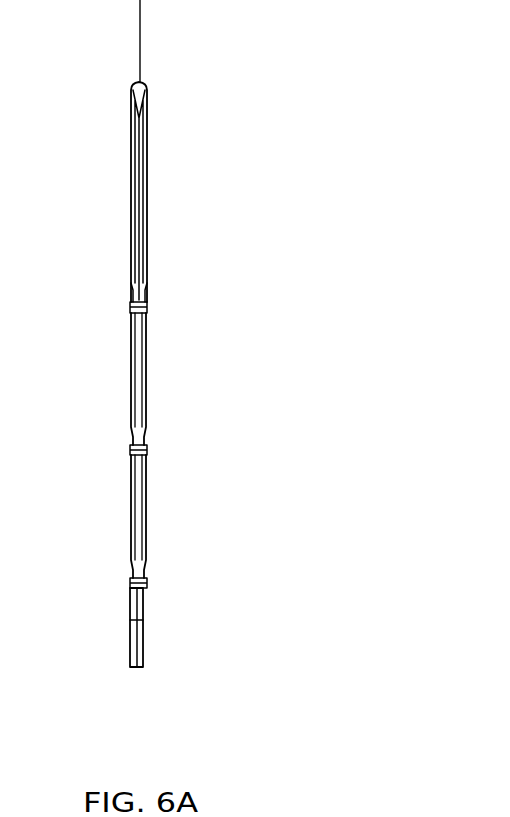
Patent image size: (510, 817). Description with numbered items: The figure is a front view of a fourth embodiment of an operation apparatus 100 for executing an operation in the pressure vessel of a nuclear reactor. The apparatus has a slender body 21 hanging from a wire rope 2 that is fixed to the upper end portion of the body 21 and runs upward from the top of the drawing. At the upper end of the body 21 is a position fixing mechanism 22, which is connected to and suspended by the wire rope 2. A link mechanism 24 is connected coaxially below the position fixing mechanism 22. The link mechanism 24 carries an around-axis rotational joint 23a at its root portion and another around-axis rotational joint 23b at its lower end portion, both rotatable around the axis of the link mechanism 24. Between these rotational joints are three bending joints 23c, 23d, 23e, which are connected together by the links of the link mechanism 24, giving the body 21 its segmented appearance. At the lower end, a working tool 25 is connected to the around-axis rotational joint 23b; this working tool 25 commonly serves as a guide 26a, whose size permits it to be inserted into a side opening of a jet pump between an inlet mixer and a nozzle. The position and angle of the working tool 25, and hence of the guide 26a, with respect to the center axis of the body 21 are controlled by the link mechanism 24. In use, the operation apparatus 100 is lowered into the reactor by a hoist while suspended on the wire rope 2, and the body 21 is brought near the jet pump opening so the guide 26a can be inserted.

The wire rope 2 is at (140, 35).
The position fixing mechanism 22 is at (148, 165).
The around-axis rotational joint 23a is at (147, 266).
The bending joint 23c is at (146, 305).
The link mechanism 24 is at (146, 341).
The body 21 is at (166, 384).
The bending joint 23d is at (146, 446).
The bending joint 23e is at (131, 583).
The working tool 25 is at (130, 658).
The guide 26a is at (148, 632).
The around-axis rotational joint 23b is at (130, 622).
The operation apparatus 100 is at (296, 196).